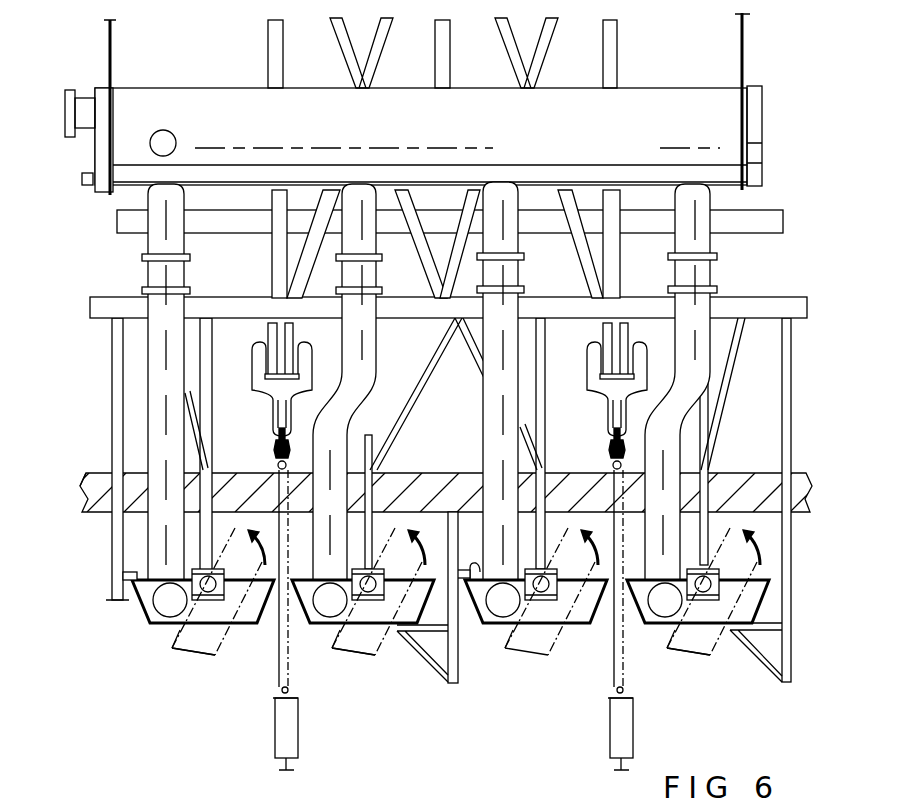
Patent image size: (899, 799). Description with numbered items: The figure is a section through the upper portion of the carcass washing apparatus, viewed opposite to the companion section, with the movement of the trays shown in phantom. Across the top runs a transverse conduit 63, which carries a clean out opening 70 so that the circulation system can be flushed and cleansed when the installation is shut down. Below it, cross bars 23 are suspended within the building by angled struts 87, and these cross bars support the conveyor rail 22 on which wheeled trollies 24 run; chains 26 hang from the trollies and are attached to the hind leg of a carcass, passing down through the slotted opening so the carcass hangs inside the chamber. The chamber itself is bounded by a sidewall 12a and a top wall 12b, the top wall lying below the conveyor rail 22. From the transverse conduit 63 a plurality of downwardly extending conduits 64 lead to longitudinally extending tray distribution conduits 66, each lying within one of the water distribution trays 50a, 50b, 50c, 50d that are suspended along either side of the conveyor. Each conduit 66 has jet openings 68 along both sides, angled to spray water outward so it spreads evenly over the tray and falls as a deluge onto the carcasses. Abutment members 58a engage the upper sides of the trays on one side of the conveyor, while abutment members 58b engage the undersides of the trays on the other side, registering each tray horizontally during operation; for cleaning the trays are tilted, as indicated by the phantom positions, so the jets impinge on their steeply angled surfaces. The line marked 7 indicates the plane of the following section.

The clean out opening 70 is at (65, 88).
The angled strut 87 is at (328, 50).
The transverse conduit 63 is at (664, 108).
The section line 7- 7 is at (497, 132).
The conveyor rail 22 is at (263, 334).
The trolley 24 is at (252, 382).
The cross bar 23 is at (765, 305).
The top wall 12b is at (793, 477).
The sidewall 12a is at (110, 798).
The downwardly extending conduit 64 is at (167, 432).
The abutment member 58a is at (137, 578).
The abutment member 58b is at (422, 658).
The tray distribution conduit 66 is at (158, 598).
The water distribution tray 50a is at (652, 623).
The water distribution tray 50b is at (557, 627).
The water distribution tray 50c is at (318, 627).
The water distribution tray 50d is at (163, 627).
The jet opening 68 is at (195, 630).
The chain 26 is at (278, 640).